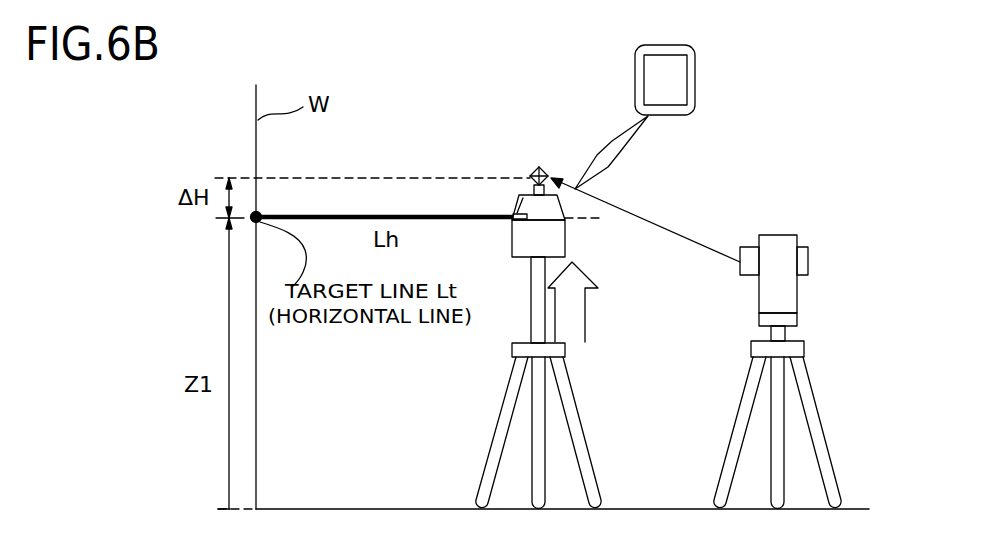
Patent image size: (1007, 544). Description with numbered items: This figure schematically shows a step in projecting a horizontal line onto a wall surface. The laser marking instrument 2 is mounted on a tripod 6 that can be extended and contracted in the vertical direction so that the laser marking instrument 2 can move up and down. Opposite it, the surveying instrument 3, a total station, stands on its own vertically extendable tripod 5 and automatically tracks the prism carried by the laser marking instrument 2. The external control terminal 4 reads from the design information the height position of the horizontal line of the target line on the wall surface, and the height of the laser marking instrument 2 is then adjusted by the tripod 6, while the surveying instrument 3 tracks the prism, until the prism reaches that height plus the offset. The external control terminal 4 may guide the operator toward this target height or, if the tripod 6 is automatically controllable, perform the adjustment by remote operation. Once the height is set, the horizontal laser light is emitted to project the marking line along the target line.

The laser marking instrument 2 is at (512, 246).
The surveying instrument 3 is at (778, 235).
The external control terminal 4 is at (635, 85).
The tripod 5 is at (735, 430).
The tripod 6 is at (489, 435).